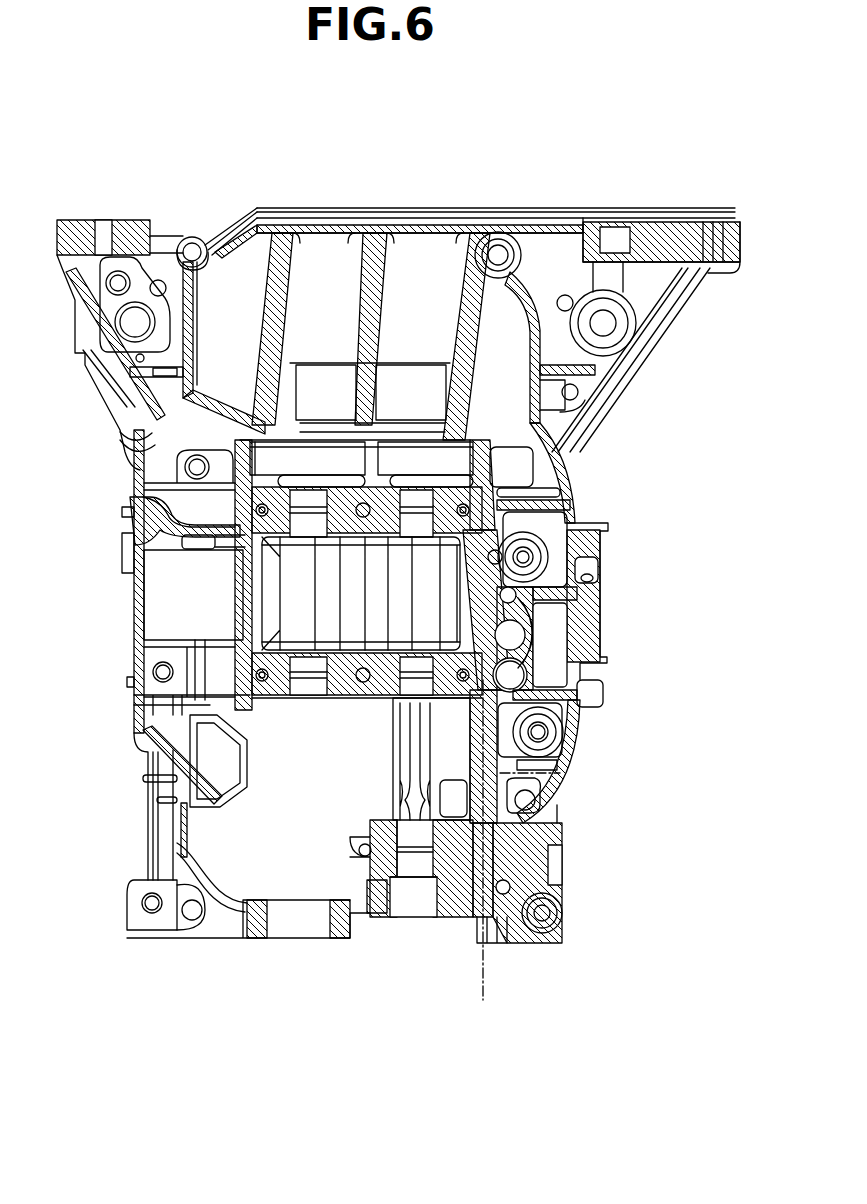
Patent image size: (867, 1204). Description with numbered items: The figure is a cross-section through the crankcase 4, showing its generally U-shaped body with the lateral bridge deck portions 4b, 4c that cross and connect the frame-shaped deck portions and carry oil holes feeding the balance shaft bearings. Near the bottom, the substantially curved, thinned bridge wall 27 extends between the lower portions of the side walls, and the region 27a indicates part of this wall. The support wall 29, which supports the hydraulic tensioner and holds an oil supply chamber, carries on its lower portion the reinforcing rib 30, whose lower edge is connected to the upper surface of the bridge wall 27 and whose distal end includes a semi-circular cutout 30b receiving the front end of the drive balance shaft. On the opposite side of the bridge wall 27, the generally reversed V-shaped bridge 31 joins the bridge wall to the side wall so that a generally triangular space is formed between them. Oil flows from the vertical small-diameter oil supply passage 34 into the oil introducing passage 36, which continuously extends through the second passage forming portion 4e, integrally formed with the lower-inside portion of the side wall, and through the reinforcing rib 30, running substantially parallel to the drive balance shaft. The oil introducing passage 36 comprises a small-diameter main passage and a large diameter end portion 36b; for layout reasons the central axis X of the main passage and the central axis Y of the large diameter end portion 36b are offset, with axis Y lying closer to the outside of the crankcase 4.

The crankcase 4 is at (622, 611).
The lateral bridge deck portion 4b is at (275, 680).
The lateral bridge deck portion 4c is at (262, 487).
The second passage forming portion 4e is at (545, 732).
The bridge wall 27 is at (336, 948).
The plate wall portion 27a is at (377, 906).
The support wall 29 is at (520, 940).
The reinforcing rib 30 is at (450, 906).
The semi-circular cutout 30b is at (407, 906).
The bridge 31 is at (337, 914).
The oil supply passage 34 is at (510, 887).
The oil introducing passage 36 is at (500, 832).
The large diameter end portion 36b is at (480, 926).
The central axis of main passage X is at (560, 776).
The central axis of large diameter end portion Y is at (488, 962).